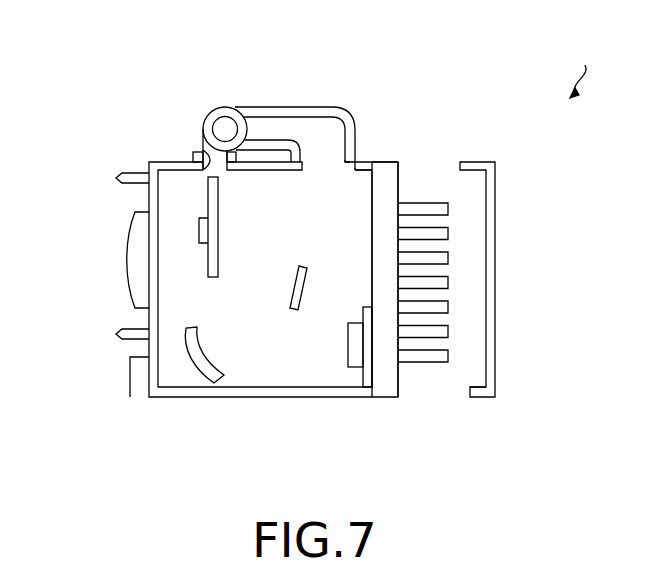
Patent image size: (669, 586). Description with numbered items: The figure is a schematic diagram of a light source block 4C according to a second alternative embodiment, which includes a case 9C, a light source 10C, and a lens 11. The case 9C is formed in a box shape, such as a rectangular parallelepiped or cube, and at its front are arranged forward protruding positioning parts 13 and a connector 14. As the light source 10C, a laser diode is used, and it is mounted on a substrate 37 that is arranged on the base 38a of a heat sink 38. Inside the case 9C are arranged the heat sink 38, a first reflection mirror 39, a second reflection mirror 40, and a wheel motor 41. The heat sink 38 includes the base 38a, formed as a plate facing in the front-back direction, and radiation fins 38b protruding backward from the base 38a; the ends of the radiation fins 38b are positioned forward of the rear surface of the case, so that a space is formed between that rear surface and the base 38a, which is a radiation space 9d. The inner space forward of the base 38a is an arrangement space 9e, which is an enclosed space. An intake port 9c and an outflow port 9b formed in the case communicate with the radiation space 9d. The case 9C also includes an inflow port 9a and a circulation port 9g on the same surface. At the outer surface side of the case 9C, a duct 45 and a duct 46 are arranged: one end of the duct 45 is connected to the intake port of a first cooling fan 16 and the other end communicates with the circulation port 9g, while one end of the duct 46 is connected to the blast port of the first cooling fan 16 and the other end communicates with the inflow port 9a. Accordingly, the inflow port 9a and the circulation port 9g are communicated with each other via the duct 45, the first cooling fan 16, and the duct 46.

The first cooling fan 16 is at (226, 112).
The duct 45 is at (283, 106).
The circulation port 9g is at (344, 168).
The case 9C is at (363, 168).
The heat sink 38 is at (387, 170).
The base 38a is at (402, 166).
The radiation fins 38b is at (448, 208).
The intake port 9c is at (460, 166).
The outflow port 9b is at (470, 389).
The radiation space 9d is at (476, 198).
The arrangement space 9e is at (352, 210).
The inflow port 9a is at (202, 157).
The duct 46 is at (195, 152).
The positioning parts 13 is at (132, 172).
The wheel motor 41 is at (208, 192).
The lens 11 is at (132, 253).
The connector 14 is at (127, 386).
The first reflection mirror 39 is at (197, 374).
The second reflection mirror 40 is at (298, 309).
The light source 10C is at (348, 326).
The substrate 37 is at (356, 386).
The light source block 4C is at (604, 61).